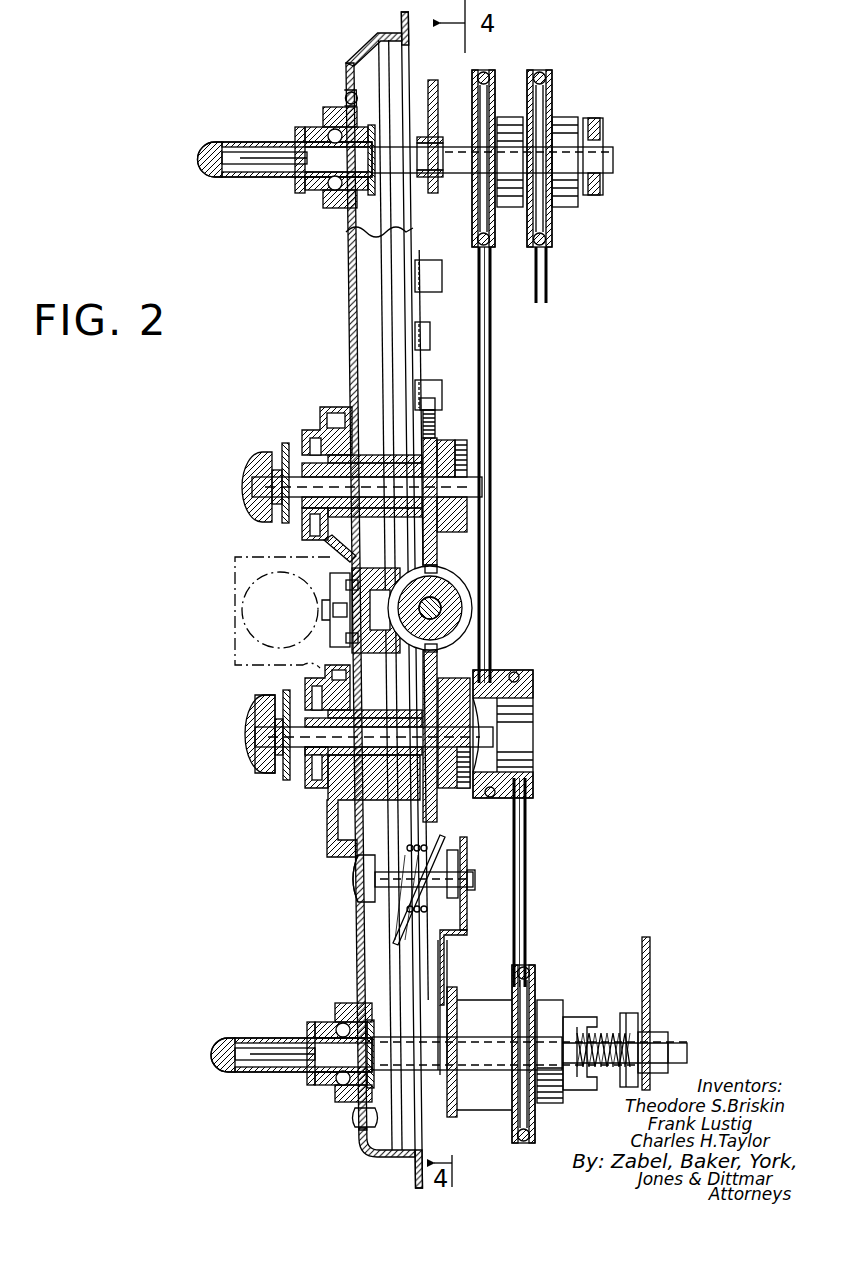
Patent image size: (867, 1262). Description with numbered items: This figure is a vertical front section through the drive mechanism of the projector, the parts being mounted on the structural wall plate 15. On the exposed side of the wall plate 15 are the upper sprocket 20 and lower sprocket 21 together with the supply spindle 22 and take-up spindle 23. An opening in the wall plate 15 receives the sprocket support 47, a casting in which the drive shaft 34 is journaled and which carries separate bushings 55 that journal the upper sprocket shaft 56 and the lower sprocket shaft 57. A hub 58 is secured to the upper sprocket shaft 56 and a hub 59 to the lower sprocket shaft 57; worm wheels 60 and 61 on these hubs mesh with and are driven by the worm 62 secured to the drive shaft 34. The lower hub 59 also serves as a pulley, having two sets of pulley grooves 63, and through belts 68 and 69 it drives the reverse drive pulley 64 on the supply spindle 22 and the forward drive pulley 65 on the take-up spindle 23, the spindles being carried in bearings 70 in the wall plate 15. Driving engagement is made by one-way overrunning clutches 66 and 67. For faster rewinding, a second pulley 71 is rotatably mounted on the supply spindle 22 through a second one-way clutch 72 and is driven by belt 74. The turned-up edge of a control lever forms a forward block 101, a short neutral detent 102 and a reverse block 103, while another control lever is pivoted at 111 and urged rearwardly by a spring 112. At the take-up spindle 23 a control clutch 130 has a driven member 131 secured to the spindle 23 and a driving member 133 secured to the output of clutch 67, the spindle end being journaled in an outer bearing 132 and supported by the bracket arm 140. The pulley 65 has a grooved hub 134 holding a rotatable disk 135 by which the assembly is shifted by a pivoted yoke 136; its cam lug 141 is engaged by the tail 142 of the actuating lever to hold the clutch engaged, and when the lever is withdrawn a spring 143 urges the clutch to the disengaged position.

The wall plate 15 is at (348, 279).
The upper sprocket 20 is at (255, 464).
The lower sprocket 21 is at (260, 766).
The supply spindle 22 is at (398, 176).
The take-up spindle 23 is at (418, 1062).
The drive shaft 34 is at (448, 613).
The sprocket support 47 is at (330, 552).
The bushings 55 is at (358, 460).
The upper sprocket shaft 56 is at (352, 515).
The lower sprocket shaft 57 is at (258, 742).
The hub 58 is at (468, 456).
The hub 59 is at (535, 690).
The worm wheel 60 is at (437, 429).
The worm wheel 61 is at (440, 656).
The worm 62 is at (452, 590).
The pulley grooves 63 is at (516, 672).
The reverse drive pulley 64 is at (472, 88).
The forward drive pulley 65 is at (534, 967).
The one-way clutch 66 is at (508, 117).
The one-way clutch 67 is at (541, 1000).
The belt 68 is at (493, 352).
The belt 69 is at (527, 866).
The bearings 70 is at (330, 113).
The second pulley 71 is at (553, 88).
The second one-way clutch 72 is at (570, 117).
The belt 74 is at (548, 293).
The forward block 101 is at (440, 282).
The neutral detent 102 is at (431, 337).
The reverse block 103 is at (440, 386).
The pivot 111 is at (478, 882).
The spring 112 is at (397, 921).
The control clutch 130 is at (603, 1008).
The driven member 131 is at (635, 1015).
The outer bearing 132 is at (658, 1031).
The driving member 133 is at (575, 1100).
The hub 134 is at (466, 1036).
The disk 135 is at (452, 990).
The yoke 136 is at (469, 926).
The arm 140 is at (650, 950).
The cam lug 141 is at (437, 1010).
The tail 142 is at (445, 1045).
The spring 143 is at (583, 1033).